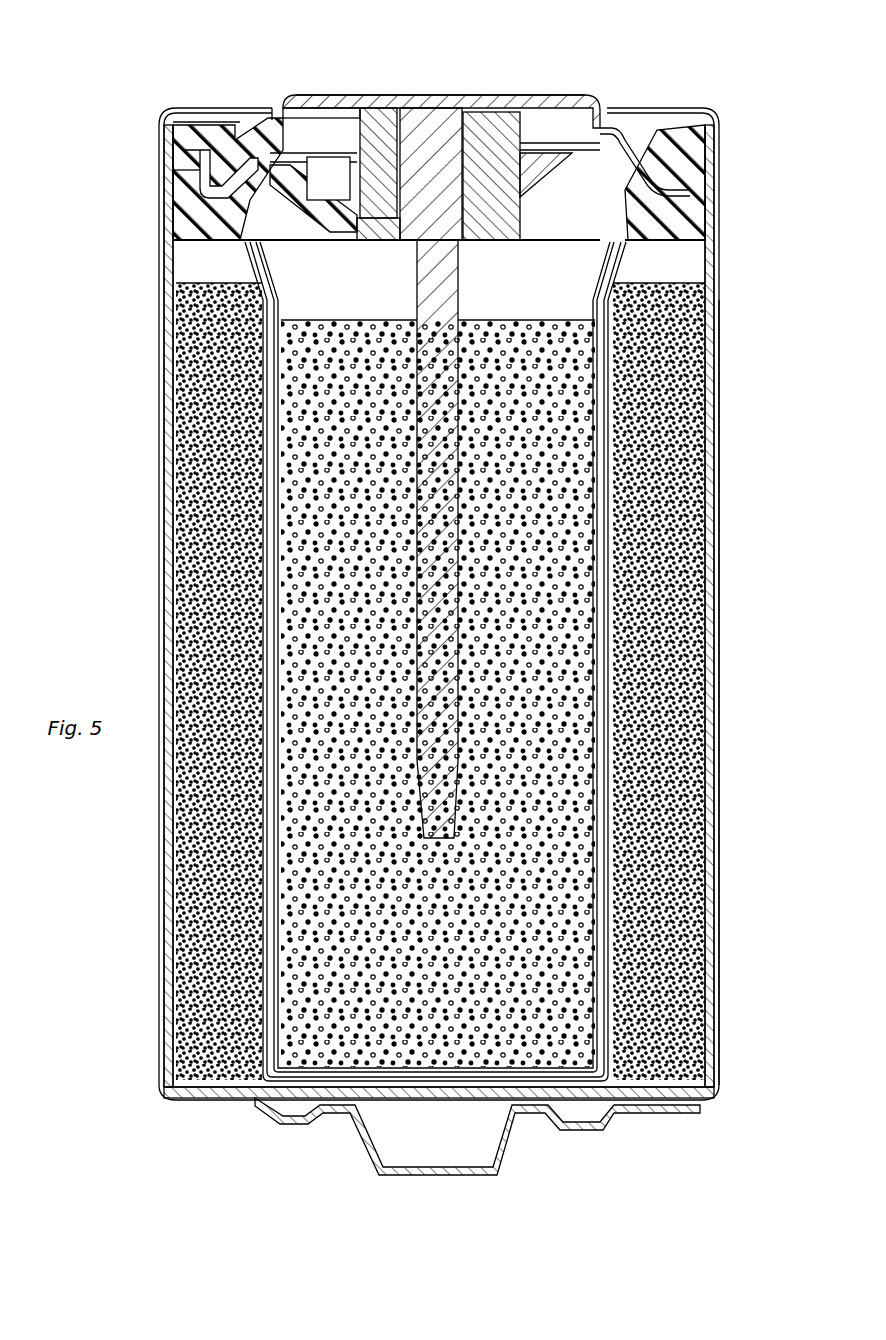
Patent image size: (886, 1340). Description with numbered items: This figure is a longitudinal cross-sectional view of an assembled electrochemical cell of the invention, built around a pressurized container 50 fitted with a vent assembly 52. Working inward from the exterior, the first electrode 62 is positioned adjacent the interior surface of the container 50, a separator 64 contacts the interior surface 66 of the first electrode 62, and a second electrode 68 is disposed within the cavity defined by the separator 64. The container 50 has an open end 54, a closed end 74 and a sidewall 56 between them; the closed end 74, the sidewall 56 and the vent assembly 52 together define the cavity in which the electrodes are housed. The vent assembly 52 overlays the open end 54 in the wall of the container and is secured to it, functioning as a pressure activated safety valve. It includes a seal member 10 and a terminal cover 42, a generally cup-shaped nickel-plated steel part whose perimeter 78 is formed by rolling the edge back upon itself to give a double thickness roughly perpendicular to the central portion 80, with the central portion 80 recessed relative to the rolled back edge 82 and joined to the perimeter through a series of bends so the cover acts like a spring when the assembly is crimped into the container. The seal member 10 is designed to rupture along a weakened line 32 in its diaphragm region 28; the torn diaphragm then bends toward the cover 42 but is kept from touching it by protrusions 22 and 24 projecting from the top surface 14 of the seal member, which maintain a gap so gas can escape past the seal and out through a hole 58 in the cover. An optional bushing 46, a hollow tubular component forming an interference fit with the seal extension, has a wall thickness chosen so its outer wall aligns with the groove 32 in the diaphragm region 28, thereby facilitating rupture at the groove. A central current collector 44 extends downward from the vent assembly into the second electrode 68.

The seal member 10 is at (697, 190).
The top surface 14 is at (615, 130).
The protrusion 22 is at (233, 120).
The protrusion 24 is at (542, 177).
The diaphragm region 28 is at (350, 217).
The weakened line 32 is at (347, 232).
The terminal cover 42 is at (575, 95).
The current collector rod 44 is at (445, 520).
The bushing 46 is at (502, 143).
The pressurized container 50 is at (728, 440).
The vent assembly 52 is at (400, 86).
The open end 54 is at (210, 195).
The sidewall 56 is at (713, 213).
The hole 58 is at (593, 143).
The first electrode 62 is at (655, 740).
The separator 64 is at (610, 580).
The interior surface 66 is at (620, 650).
The second electrode 68 is at (450, 895).
The closed end 74 is at (387, 1095).
The perimeter 78 is at (197, 175).
The central portion 80 is at (350, 122).
The rolled back edge 82 is at (223, 217).